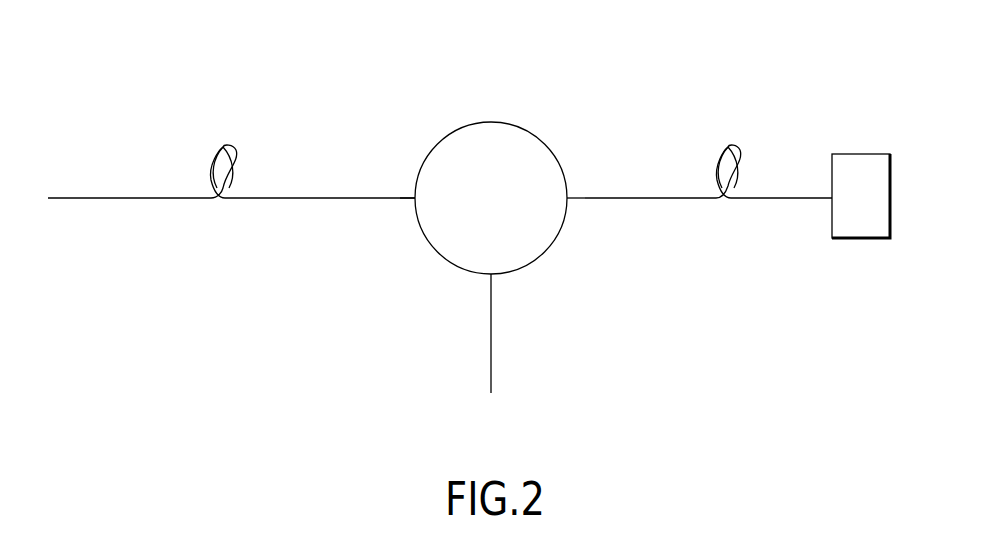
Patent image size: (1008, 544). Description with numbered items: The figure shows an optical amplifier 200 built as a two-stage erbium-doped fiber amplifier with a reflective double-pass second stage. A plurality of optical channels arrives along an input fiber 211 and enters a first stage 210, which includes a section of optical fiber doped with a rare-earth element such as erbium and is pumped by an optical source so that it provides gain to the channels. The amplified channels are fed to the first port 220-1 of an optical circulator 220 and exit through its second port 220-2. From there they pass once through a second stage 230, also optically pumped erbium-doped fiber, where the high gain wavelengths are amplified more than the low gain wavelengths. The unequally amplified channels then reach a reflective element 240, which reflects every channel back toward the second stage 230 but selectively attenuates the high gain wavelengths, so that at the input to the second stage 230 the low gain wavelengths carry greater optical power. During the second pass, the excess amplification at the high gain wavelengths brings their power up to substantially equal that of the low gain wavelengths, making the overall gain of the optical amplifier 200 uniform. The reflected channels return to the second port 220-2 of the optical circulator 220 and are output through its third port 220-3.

The optical amplifier 200 is at (246, 380).
The first stage 210 is at (224, 147).
The input fiber 211 is at (77, 198).
The optical circulator 220 is at (514, 125).
The first port 220-1 is at (415, 190).
The second port 220-2 is at (568, 199).
The third port 220-3 is at (493, 276).
The second stage 230 is at (728, 147).
The reflective element 240 is at (843, 238).